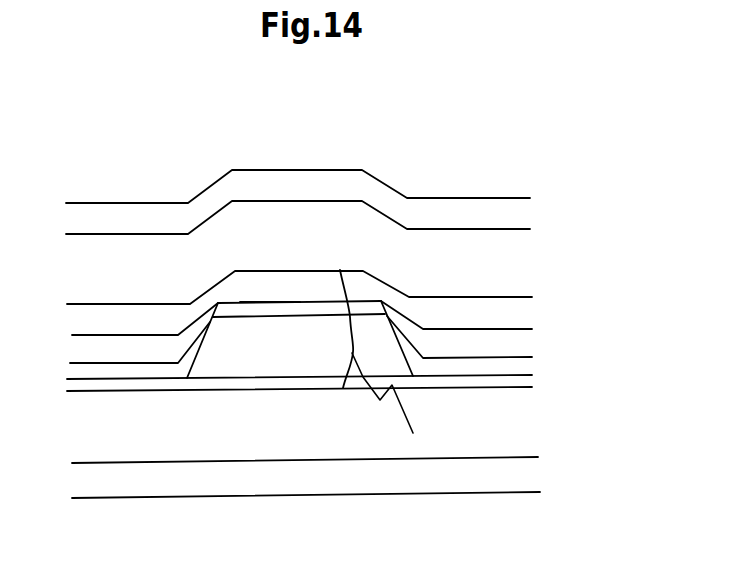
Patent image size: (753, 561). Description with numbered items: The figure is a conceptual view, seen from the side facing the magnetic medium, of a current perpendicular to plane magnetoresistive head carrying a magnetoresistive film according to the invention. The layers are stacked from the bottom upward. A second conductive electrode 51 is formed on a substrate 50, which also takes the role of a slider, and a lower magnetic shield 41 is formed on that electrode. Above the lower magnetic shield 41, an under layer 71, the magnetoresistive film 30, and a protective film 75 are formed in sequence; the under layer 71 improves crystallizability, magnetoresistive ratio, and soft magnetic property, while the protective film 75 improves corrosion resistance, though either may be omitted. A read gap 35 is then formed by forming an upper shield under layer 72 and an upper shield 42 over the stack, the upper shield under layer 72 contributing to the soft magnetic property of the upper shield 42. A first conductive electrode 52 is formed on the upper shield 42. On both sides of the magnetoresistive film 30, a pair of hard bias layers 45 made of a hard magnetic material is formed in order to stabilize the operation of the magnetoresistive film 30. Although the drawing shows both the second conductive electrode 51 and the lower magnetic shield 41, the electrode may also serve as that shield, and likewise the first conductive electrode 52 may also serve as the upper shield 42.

The substrate 50 is at (525, 507).
The second conductive electrode 51 is at (525, 474).
The lower magnetic shield 41 is at (525, 439).
The under layer 71 is at (520, 382).
The hard bias layers 45 is at (515, 345).
The magnetoresistive film 30 is at (392, 340).
The protective film 75 is at (285, 307).
The read gap 35 is at (391, 358).
The upper shield under layer 72 is at (514, 322).
The upper shield 42 is at (520, 243).
The first conductive electrode 52 is at (520, 213).